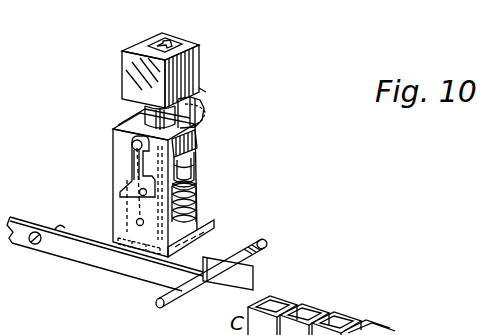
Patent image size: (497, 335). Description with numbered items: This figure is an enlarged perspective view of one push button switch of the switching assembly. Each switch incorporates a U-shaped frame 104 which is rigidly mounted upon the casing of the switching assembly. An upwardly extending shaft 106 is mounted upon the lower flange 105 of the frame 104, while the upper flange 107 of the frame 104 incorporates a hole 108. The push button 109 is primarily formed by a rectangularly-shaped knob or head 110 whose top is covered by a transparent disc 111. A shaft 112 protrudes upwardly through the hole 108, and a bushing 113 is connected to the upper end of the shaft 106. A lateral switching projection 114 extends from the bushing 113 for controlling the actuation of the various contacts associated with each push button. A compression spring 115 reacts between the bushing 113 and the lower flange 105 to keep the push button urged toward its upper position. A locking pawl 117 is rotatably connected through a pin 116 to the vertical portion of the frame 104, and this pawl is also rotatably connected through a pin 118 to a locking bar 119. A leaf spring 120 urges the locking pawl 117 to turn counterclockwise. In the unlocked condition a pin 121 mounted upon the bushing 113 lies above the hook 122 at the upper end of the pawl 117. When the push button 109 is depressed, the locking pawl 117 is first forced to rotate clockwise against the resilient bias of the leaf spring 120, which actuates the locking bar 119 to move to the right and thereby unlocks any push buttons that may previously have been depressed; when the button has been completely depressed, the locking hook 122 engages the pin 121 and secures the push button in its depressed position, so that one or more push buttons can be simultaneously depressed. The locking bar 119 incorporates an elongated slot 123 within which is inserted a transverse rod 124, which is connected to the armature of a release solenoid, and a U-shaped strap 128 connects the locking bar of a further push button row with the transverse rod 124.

The U-shaped frame 104 is at (115, 128).
The lower flange 105 is at (210, 228).
The shaft 106 is at (188, 205).
The upper flange 107 is at (137, 118).
The hole 108 is at (198, 133).
The push button 109 is at (205, 93).
The knob 110 is at (190, 62).
The transparent disc 111 is at (192, 40).
The shaft 112 is at (178, 113).
The bushing 113 is at (190, 152).
The lateral switching projection 114 is at (212, 105).
The compression spring 115 is at (188, 193).
The pin 116 is at (134, 228).
The locking pawl 117 is at (133, 189).
The pin 118 is at (150, 196).
The locking bar 119 is at (24, 227).
The leaf spring 120 is at (140, 240).
The pin 121 is at (133, 146).
The hook 122 is at (135, 157).
The elongated slot 123 is at (205, 295).
The transverse rod 124 is at (262, 243).
The U-shaped strap 128 is at (248, 279).